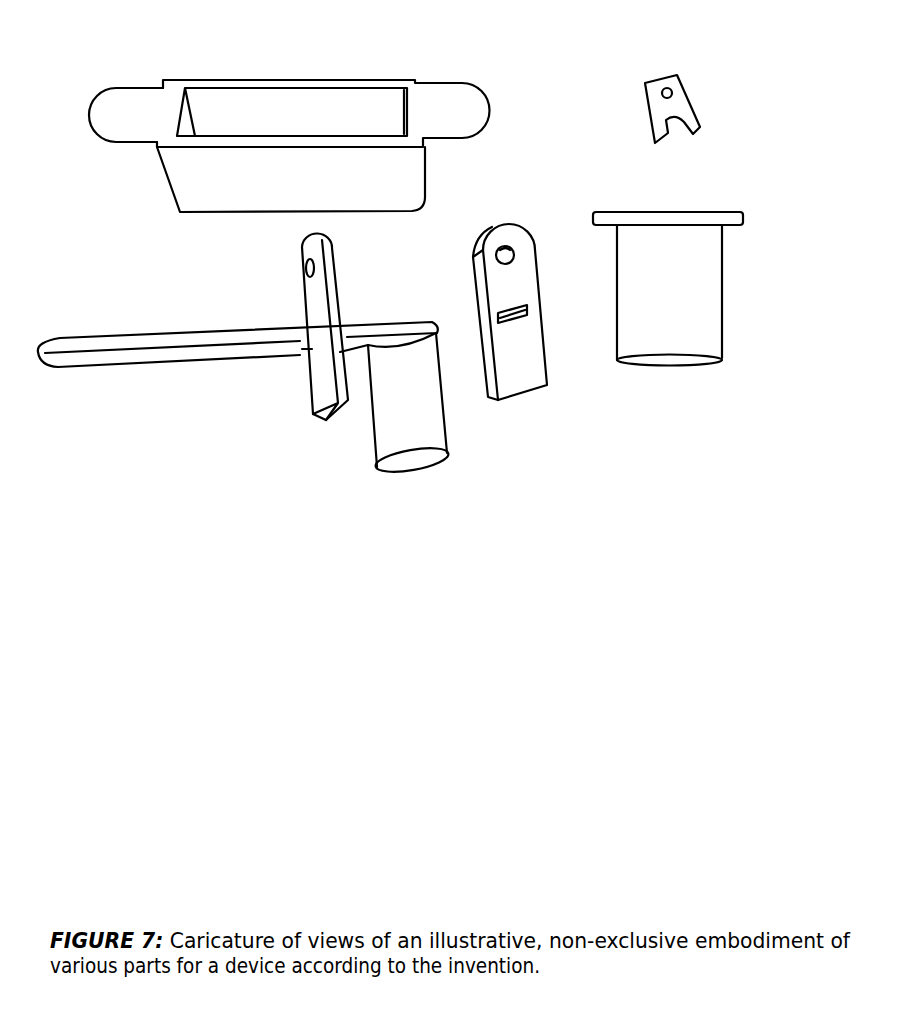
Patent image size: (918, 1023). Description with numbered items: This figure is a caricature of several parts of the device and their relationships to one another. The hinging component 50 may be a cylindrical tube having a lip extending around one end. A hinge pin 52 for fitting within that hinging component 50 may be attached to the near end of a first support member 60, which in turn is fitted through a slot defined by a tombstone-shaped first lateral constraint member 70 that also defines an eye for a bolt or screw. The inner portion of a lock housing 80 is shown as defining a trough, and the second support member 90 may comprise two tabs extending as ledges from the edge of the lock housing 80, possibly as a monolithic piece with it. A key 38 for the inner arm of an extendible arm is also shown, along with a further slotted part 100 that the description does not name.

The lock housing 80 is at (335, 67).
The second support member 90 is at (465, 108).
The key 38 is at (680, 80).
The hinging component 50 is at (712, 327).
The first support member 60 is at (100, 357).
The first lateral constraint member 70 is at (318, 380).
The hinge pin 52 is at (388, 437).
The slotted slab 100 is at (533, 373).